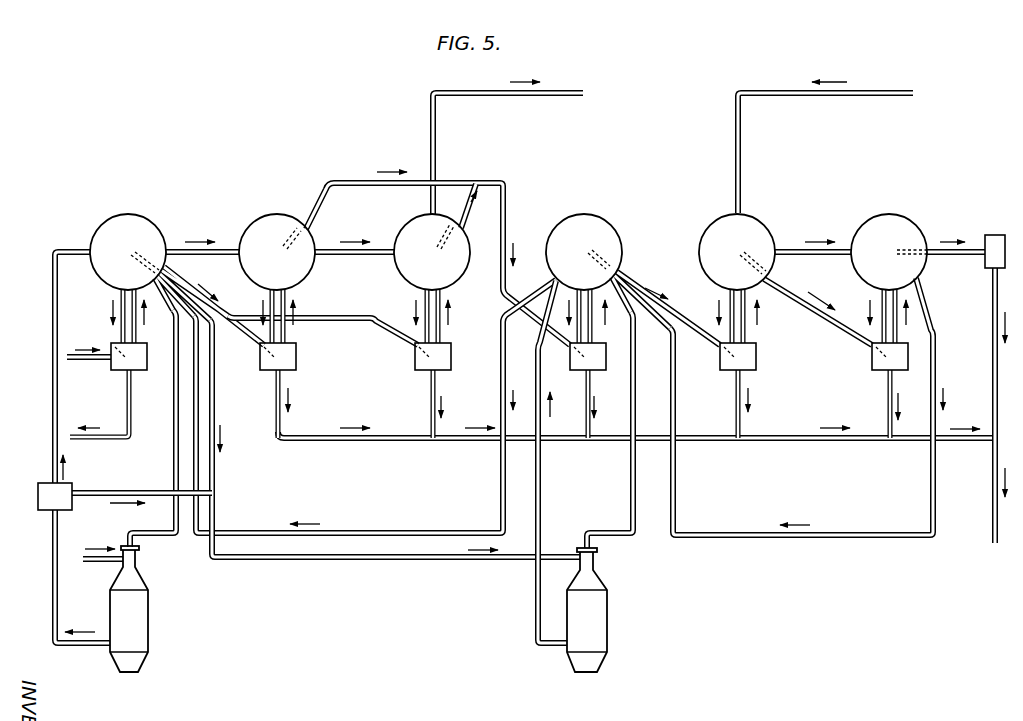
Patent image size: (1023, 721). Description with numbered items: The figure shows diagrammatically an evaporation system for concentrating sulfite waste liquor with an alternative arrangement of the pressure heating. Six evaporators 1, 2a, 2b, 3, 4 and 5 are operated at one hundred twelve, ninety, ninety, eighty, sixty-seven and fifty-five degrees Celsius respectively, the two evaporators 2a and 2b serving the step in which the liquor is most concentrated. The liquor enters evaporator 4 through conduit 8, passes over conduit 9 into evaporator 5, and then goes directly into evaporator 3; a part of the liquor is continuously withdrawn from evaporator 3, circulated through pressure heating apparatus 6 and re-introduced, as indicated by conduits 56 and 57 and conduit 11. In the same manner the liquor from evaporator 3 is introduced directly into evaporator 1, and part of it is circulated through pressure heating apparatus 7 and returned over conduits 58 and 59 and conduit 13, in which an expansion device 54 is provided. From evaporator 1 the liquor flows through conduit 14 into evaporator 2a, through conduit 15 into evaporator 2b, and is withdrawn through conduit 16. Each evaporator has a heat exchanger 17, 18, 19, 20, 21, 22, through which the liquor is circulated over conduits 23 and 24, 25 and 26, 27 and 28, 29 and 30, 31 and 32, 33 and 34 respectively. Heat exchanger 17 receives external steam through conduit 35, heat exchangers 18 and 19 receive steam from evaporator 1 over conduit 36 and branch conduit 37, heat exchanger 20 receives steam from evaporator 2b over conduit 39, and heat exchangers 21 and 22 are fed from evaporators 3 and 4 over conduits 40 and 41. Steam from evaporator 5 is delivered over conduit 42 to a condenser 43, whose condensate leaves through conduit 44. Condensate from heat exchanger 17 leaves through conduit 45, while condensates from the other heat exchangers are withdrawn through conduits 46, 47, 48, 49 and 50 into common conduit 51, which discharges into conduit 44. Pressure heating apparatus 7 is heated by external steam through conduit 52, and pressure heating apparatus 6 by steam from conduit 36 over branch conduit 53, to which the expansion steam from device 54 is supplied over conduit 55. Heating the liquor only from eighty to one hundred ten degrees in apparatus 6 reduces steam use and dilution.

The evaporator 1 is at (125, 215).
The evaporator 2a is at (278, 214).
The evaporator 2b is at (414, 214).
The evaporator 3 is at (583, 213).
The evaporator 4 is at (752, 218).
The evaporator 5 is at (905, 213).
The pressure heating apparatus 6 is at (597, 603).
The pressure heating apparatus 7 is at (138, 598).
The conduit 8 is at (743, 143).
The conduit 9 is at (834, 250).
The conduit 11 is at (542, 492).
The conduit 13 is at (52, 415).
The conduit 14 is at (231, 248).
The conduit 15 is at (375, 248).
The conduit 16 is at (438, 124).
The heat exchanger 17 is at (141, 360).
The heat exchanger 18 is at (297, 361).
The heat exchanger 19 is at (446, 360).
The heat exchanger 20 is at (605, 360).
The heat exchanger 21 is at (758, 360).
The heat exchanger 22 is at (871, 367).
The conduit 23 is at (118, 297).
The conduit 24 is at (133, 332).
The conduit 25 is at (270, 334).
The conduit 26 is at (290, 335).
The conduit 27 is at (423, 296).
The conduit 28 is at (446, 302).
The conduit 29 is at (577, 333).
The conduit 30 is at (597, 333).
The conduit 31 is at (727, 335).
The conduit 32 is at (748, 334).
The conduit 33 is at (880, 336).
The conduit 34 is at (900, 335).
The conduit 35 is at (78, 360).
The conduit 36 is at (190, 292).
The branch conduit 37 is at (384, 334).
The conduit 39 is at (460, 186).
The conduit 40 is at (634, 278).
The conduit 41 is at (843, 318).
The conduit 42 is at (933, 249).
The condenser 43 is at (992, 234).
The conduit 44 is at (993, 386).
The conduit 45 is at (132, 408).
The conduit 46 is at (284, 420).
The conduit 47 is at (430, 396).
The conduit 48 is at (586, 408).
The conduit 49 is at (735, 410).
The conduit 50 is at (888, 402).
The common conduit 51 is at (787, 441).
The conduit 52 is at (92, 561).
The branch conduit 53 is at (352, 562).
The expansion device 54 is at (73, 486).
The conduit 55 is at (122, 491).
The conduit 56 is at (676, 461).
The conduit 57 is at (631, 400).
The conduit 58 is at (198, 466).
The conduit 59 is at (176, 388).